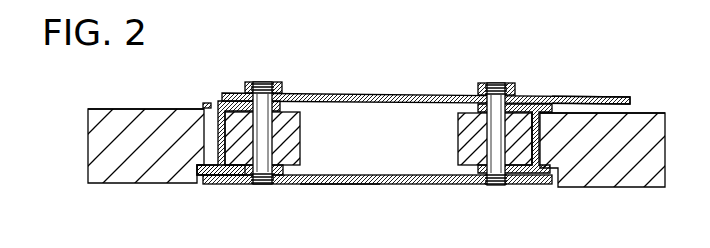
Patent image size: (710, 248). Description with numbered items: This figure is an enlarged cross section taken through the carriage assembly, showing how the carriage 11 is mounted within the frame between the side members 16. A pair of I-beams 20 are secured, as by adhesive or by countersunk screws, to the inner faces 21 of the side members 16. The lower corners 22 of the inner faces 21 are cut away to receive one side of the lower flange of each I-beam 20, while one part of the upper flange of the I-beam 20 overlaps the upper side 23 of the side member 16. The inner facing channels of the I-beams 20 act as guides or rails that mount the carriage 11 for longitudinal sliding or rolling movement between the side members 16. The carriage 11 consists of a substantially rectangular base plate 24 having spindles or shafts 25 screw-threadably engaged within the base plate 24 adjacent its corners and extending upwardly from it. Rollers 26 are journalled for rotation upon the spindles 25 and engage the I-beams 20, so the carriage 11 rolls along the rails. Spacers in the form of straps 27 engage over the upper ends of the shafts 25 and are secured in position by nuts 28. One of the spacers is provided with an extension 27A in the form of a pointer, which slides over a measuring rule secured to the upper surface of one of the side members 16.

The carriage 11 is at (338, 194).
The side members 16 is at (100, 138).
The I-beams 20 is at (210, 93).
The inner faces 21 is at (218, 128).
The lower corners 22 is at (202, 182).
The upper side 23 is at (118, 109).
The base plate 24 is at (453, 184).
The spindles 25 is at (263, 82).
The rollers 26 is at (298, 150).
The straps 27 is at (353, 93).
The extension 27A is at (598, 96).
The nuts 28 is at (520, 94).